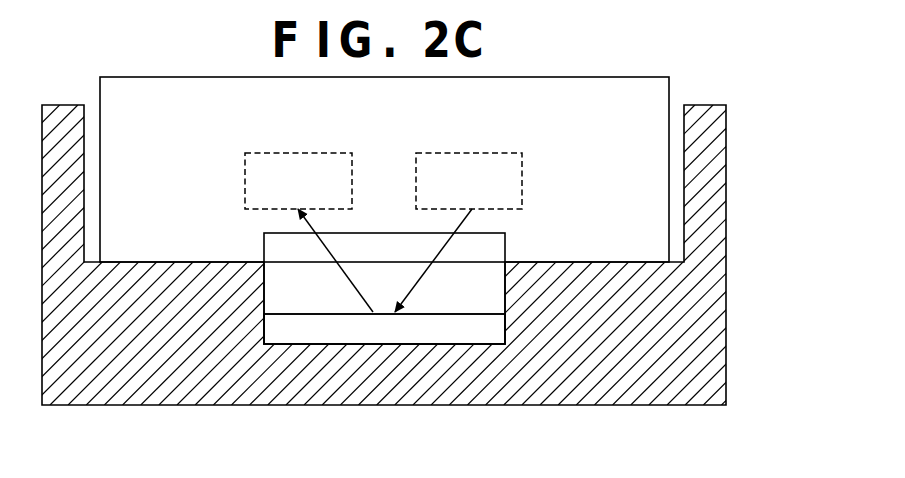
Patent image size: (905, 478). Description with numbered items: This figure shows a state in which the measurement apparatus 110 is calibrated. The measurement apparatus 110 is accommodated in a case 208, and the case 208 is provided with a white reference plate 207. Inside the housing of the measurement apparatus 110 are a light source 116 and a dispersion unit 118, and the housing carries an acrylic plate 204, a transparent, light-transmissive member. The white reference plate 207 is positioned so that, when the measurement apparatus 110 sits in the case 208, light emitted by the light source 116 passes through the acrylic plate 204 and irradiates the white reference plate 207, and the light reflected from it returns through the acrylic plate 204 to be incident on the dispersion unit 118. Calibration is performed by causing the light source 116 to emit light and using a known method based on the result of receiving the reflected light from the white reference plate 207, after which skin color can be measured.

The measurement apparatus 110 is at (670, 90).
The case 208 is at (727, 182).
The acrylic plate 204 is at (505, 243).
The white reference plate 207 is at (506, 324).
The dispersion unit 118 is at (317, 152).
The light source 116 is at (484, 152).